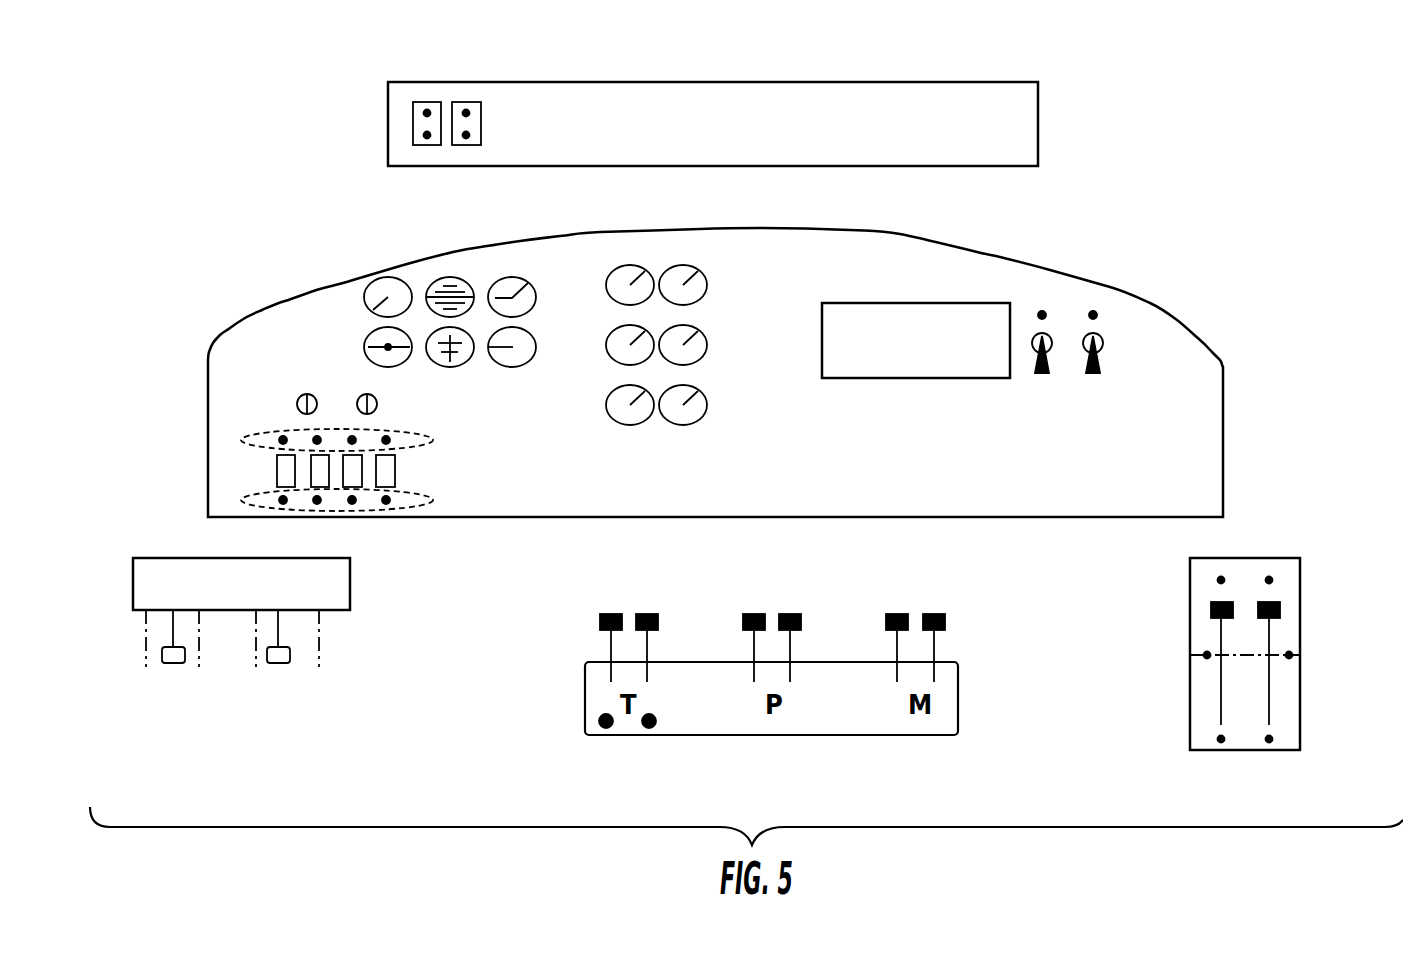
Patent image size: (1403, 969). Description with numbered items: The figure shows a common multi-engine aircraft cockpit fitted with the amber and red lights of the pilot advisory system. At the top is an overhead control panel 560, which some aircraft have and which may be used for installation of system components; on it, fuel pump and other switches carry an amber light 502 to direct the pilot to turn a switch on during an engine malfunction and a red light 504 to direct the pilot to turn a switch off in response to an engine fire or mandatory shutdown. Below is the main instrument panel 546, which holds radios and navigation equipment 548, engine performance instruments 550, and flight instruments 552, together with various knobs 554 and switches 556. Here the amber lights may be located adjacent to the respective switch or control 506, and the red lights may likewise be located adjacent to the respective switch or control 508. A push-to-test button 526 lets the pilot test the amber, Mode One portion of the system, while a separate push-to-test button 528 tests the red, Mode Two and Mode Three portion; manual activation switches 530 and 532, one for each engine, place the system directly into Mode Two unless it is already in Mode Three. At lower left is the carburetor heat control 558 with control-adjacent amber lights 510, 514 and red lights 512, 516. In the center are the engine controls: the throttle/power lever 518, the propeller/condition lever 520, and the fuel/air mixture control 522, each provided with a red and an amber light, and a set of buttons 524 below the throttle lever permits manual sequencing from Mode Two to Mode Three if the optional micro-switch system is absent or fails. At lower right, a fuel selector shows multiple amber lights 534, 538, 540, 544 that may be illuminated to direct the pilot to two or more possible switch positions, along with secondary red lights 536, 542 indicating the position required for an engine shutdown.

The amber light 502 is at (463, 98).
The red light 504 is at (465, 150).
The switch or control adjacent to amber light 506 is at (236, 440).
The switch or control adjacent to red light 508 is at (236, 500).
The amber light 510 is at (130, 738).
The red light 512 is at (196, 738).
The amber light 514 is at (260, 738).
The red light 516 is at (324, 738).
The throttle/power lever 518 is at (630, 606).
The propeller/condition lever 520 is at (773, 606).
The fuel/air mixture control 522 is at (916, 606).
The set of buttons 524 is at (647, 738).
The push-to-test button 526 is at (1045, 303).
The push-to-test button 528 is at (1098, 308).
The manual activation switch 530 is at (1042, 382).
The manual activation switch 532 is at (1093, 382).
The amber light 534 is at (1210, 582).
The secondary red light 536 is at (1206, 662).
The amber light 538 is at (1220, 754).
The amber light 540 is at (1271, 570).
The secondary red light 542 is at (1308, 684).
The amber light 544 is at (1270, 754).
The main instrument panel 546 is at (1230, 368).
The radios and navigation equipment 548 is at (877, 388).
The engine performance instruments 550 is at (720, 356).
The flight instruments 552 is at (362, 318).
The knobs 554 is at (290, 402).
The switches 556 is at (422, 466).
The carburetor heat control 558 is at (358, 585).
The overhead control panel 560 is at (1048, 133).